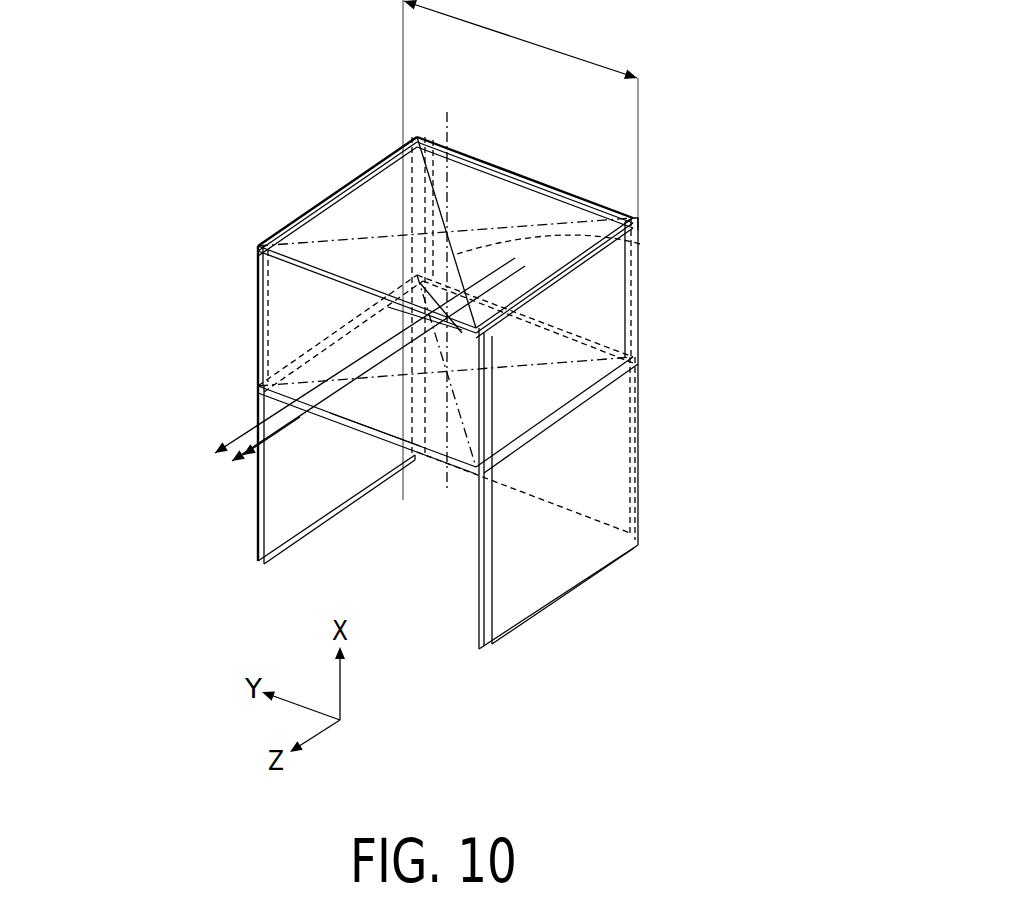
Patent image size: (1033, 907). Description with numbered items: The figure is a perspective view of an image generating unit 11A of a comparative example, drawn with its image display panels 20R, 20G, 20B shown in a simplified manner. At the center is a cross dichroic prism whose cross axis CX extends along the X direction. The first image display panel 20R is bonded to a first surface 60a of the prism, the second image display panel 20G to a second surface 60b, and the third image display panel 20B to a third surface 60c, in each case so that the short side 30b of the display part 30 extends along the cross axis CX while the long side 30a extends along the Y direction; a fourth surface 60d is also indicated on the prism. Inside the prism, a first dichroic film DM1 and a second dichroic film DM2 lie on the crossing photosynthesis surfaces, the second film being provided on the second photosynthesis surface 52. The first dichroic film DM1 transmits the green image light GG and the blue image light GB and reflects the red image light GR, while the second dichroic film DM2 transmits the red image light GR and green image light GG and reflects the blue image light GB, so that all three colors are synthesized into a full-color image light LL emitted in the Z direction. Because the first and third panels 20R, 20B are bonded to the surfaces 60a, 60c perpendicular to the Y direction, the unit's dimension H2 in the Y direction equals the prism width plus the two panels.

The image generating unit 11A is at (692, 93).
The dimension H2 is at (520, 250).
The cross axis CX is at (448, 120).
The display part 30 is at (478, 296).
The long side 30a is at (575, 192).
The short side 30b is at (406, 210).
The first image display panel 20R is at (248, 401).
The second image display panel 20G is at (567, 176).
The third image display panel 20B is at (628, 576).
The first surface 60a is at (413, 137).
The second surface 60b is at (418, 135).
The third surface 60c is at (638, 220).
The holder fourth portion 60d is at (382, 425).
The second photosynthesis surface 52 is at (525, 302).
The first dichroic film DM1 is at (640, 276).
The second dichroic film DM2 is at (640, 244).
The image light LL is at (122, 413).
The red image light GR is at (213, 450).
The green image light GG is at (228, 460).
The blue image light GB is at (240, 462).